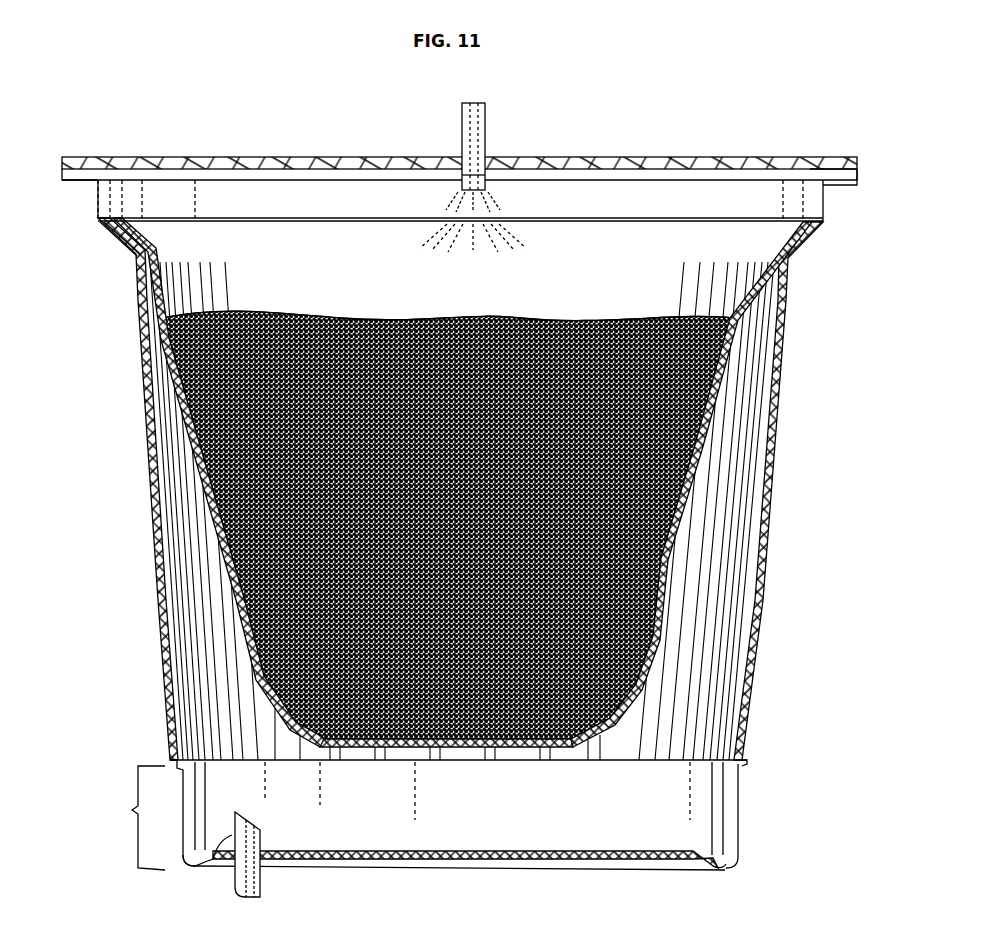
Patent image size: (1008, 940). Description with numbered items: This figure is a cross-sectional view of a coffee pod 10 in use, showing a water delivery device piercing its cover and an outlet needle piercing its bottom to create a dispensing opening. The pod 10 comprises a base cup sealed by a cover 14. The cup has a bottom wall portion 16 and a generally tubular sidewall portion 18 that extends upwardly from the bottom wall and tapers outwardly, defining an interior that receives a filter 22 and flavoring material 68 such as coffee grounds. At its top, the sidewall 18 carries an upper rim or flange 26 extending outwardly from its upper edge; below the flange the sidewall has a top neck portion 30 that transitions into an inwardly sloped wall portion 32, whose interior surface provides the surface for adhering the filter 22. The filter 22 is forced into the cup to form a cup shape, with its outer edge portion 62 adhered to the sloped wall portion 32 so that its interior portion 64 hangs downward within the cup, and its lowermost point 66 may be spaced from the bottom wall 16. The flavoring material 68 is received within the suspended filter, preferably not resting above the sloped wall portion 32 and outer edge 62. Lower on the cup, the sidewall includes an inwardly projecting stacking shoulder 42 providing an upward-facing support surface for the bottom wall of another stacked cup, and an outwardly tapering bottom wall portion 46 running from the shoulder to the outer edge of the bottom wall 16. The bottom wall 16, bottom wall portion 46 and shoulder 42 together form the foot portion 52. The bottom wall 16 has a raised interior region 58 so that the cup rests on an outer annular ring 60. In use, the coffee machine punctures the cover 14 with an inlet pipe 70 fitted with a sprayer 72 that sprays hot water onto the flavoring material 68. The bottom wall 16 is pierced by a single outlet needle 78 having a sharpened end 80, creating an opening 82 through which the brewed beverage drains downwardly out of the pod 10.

The coffee pod 10 is at (752, 103).
The cover 14 is at (800, 157).
The bottom wall portion 16 is at (474, 837).
The sidewall portion 18 is at (786, 355).
The filter 22 is at (472, 567).
The upper rim or flange 26 is at (826, 187).
The top neck portion 30 is at (98, 200).
The inwardly sloped wall portion 32 is at (123, 240).
The stacking shoulder 42 is at (745, 766).
The bottom wall portion of the sidewall 46 is at (742, 820).
The foot portion 52 is at (132, 810).
The raised interior region 58 is at (640, 860).
The outer annular ring 60 is at (725, 870).
The outer edge portion of the filter 62 is at (796, 244).
The interior portion of the filter 64 is at (210, 497).
The lowermost point of the filter 66 is at (462, 750).
The flavoring material 68 is at (686, 407).
The inlet pipe 70 is at (487, 135).
The sprayer 72 is at (462, 180).
The outlet needle 78 is at (262, 880).
The sharpened end 80 is at (195, 866).
The opening 82 is at (232, 858).